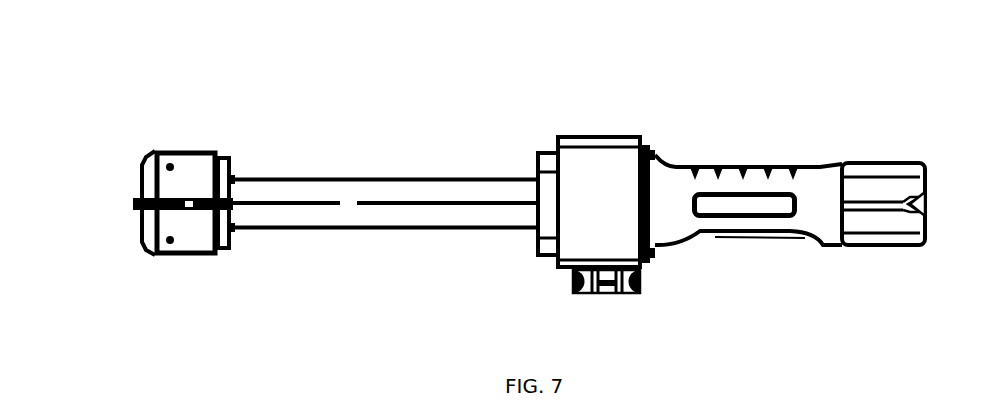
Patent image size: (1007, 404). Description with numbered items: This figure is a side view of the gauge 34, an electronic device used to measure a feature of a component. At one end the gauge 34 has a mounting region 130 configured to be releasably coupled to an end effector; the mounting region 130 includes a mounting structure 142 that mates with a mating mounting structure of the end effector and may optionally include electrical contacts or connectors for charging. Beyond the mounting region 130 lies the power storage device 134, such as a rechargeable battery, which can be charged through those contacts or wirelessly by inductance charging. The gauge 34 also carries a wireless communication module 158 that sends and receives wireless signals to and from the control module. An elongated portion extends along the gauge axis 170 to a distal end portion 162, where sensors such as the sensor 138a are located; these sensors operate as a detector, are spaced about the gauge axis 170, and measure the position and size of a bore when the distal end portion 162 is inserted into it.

The gauge 34 is at (253, 293).
The mounting region 130 is at (648, 280).
The power storage device 134 is at (833, 188).
The sensor 138a is at (185, 200).
The mounting structure 142 is at (585, 292).
The wireless communication module 158 is at (781, 208).
The distal end portion 162 is at (138, 252).
The gauge axis 170 is at (367, 188).